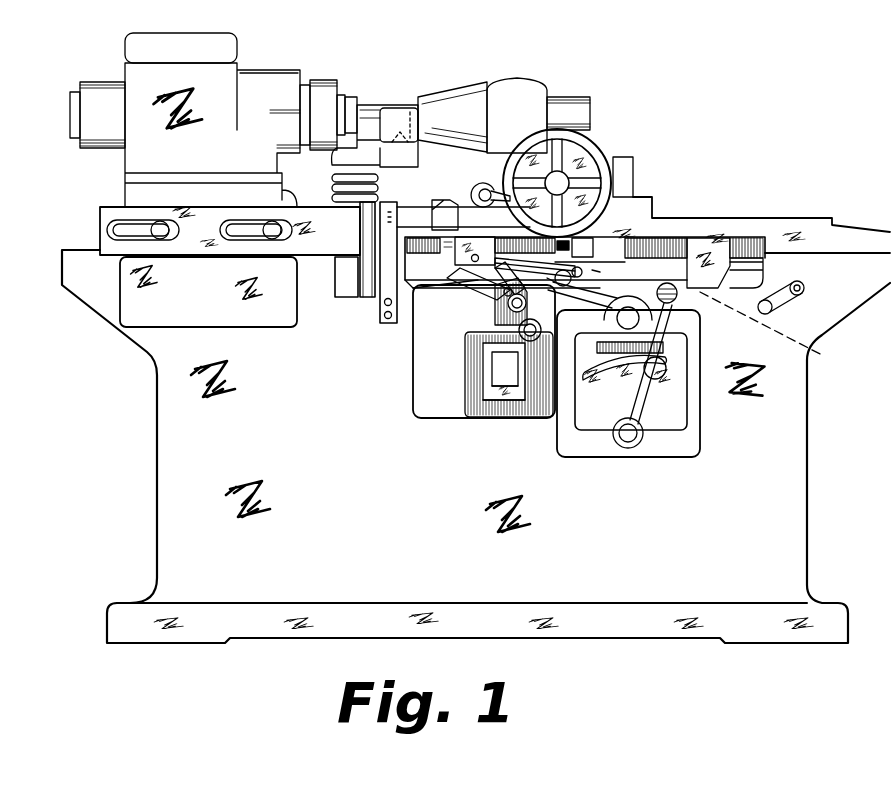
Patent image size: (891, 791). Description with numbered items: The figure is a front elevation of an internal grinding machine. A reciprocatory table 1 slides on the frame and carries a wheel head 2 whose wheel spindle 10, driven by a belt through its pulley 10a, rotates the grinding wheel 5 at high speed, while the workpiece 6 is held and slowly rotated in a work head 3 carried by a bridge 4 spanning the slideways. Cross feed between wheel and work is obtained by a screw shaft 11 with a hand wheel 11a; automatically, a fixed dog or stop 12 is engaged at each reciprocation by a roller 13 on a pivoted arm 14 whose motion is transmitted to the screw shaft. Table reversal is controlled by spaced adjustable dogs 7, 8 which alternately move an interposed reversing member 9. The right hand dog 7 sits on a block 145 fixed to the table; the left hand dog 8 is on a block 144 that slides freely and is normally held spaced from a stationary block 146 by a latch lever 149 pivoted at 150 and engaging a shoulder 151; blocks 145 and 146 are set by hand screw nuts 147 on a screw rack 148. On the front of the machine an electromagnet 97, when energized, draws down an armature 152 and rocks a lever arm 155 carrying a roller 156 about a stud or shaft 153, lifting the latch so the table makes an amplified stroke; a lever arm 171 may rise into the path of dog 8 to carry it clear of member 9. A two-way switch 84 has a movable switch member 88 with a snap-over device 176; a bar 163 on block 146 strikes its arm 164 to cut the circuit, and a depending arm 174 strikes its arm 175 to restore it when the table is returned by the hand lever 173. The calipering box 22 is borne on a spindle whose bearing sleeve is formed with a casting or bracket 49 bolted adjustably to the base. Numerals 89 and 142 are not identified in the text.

The reciprocatory table 1 is at (843, 237).
The wheel head 2 is at (538, 95).
The work head 3 is at (265, 78).
The bridge 4 is at (130, 208).
The grinding wheel 5 is at (352, 110).
The workpiece 6 is at (342, 112).
The right hand table dog 7 is at (817, 354).
The left hand table dog 8 is at (617, 258).
The reversing member 9 is at (624, 278).
The wheel spindle 10 is at (381, 125).
The pulley 10a is at (571, 102).
The screw shaft 11 is at (560, 179).
The hand wheel 11a is at (605, 158).
The fixed dog or stop 12 is at (438, 212).
The roller 13 is at (476, 187).
The pivoted arm 14 is at (491, 190).
The box 22 is at (398, 112).
The casting or bracket 49 is at (305, 248).
The two-way switch 84 is at (524, 301).
The movable switch member 88 is at (497, 347).
The link rod 89 is at (495, 313).
The electromagnet 97 is at (497, 410).
The barrel 142 is at (442, 100).
The block 144 is at (595, 262).
The block 145 is at (712, 247).
The block 146 is at (486, 245).
The hand screw nuts 147 is at (790, 178).
The screw rack 148 is at (762, 240).
The latch lever 149 is at (583, 268).
The pivot 150 is at (474, 255).
The shoulder 151 is at (580, 276).
The armature 152 is at (478, 398).
The stud or shaft 153 is at (560, 408).
The lever arm 155 is at (542, 322).
The roller 156 is at (548, 280).
The bar 163 is at (488, 287).
The arm 164 is at (505, 300).
The lever arm 171 is at (578, 296).
The hand lever 173 is at (662, 302).
The depending arm 174 is at (480, 280).
The arm 175 is at (493, 293).
The snap-over device 176 is at (519, 418).